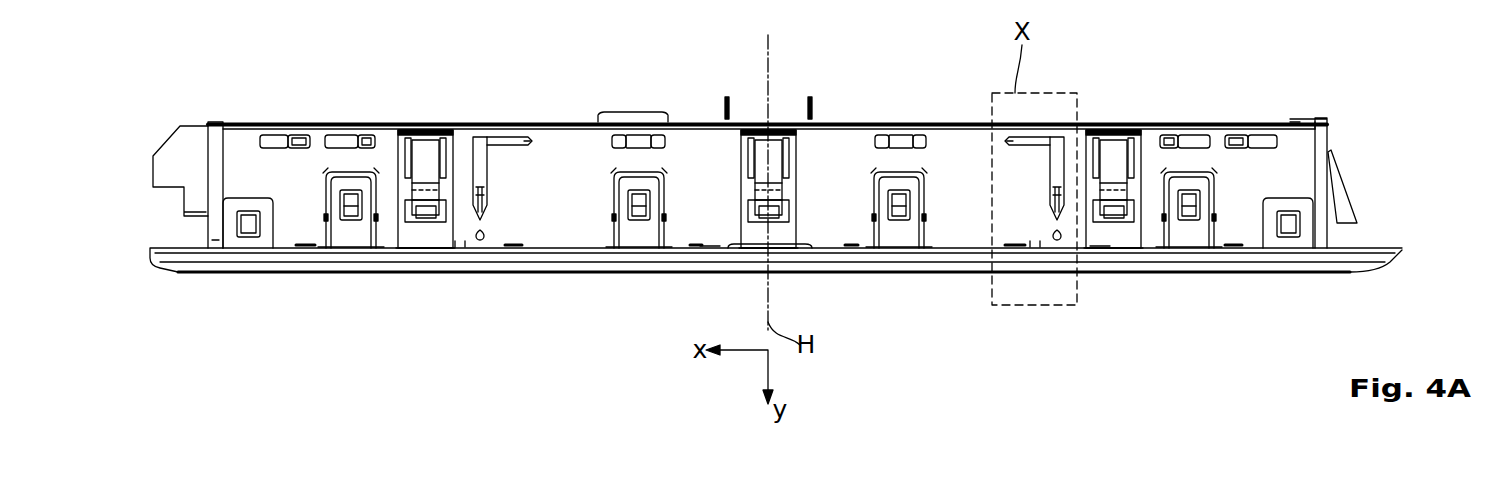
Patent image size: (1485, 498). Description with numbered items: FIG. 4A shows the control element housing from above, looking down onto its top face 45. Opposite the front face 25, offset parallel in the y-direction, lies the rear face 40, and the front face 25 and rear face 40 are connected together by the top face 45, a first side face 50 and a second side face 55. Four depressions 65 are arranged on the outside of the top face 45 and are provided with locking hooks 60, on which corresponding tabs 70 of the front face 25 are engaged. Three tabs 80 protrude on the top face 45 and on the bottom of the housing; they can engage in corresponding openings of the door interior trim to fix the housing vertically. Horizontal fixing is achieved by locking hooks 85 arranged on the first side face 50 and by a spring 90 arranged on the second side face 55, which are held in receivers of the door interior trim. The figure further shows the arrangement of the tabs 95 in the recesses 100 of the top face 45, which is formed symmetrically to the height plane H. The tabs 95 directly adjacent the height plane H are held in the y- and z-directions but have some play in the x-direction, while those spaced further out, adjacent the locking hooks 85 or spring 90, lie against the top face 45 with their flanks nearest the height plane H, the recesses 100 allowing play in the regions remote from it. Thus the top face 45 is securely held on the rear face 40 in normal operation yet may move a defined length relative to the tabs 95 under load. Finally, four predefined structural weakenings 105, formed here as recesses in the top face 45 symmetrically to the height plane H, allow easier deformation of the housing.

The front face 25 is at (1383, 262).
The rear face 40 is at (430, 122).
The top face 45 is at (1297, 140).
The first side face 50 is at (208, 232).
The second side face 55 is at (1328, 150).
The locking hook 60 is at (350, 192).
The depression 65 is at (335, 175).
The tab 70 is at (368, 205).
The tab 80 is at (428, 180).
The locking hook 85 is at (175, 150).
The spring 90 is at (1340, 190).
The tab 95 is at (299, 135).
The recess 100 is at (272, 135).
The structural weakening 105 is at (478, 140).